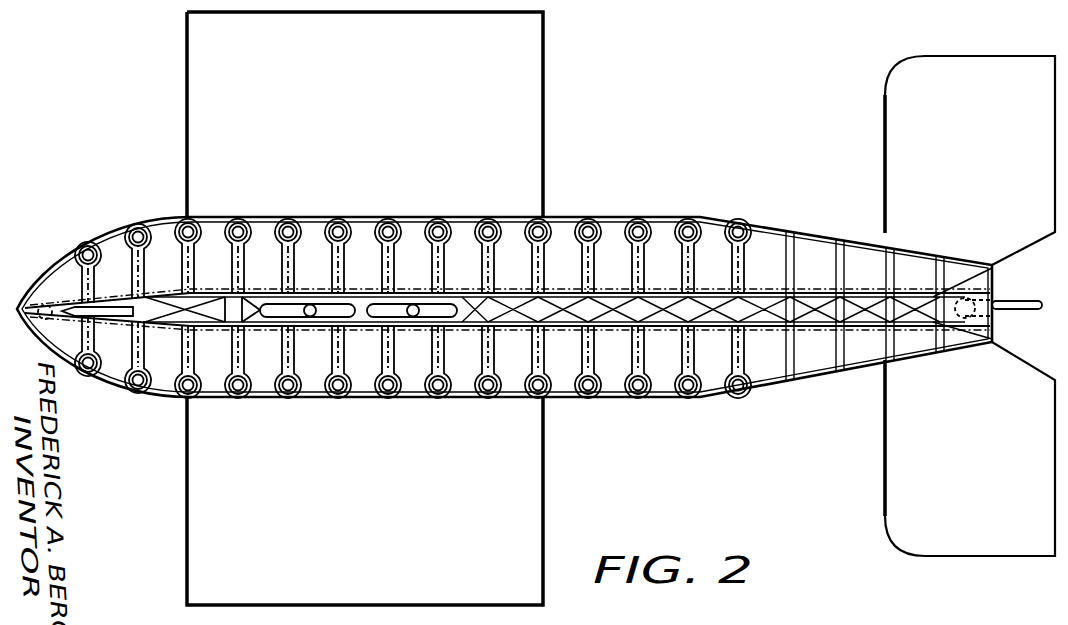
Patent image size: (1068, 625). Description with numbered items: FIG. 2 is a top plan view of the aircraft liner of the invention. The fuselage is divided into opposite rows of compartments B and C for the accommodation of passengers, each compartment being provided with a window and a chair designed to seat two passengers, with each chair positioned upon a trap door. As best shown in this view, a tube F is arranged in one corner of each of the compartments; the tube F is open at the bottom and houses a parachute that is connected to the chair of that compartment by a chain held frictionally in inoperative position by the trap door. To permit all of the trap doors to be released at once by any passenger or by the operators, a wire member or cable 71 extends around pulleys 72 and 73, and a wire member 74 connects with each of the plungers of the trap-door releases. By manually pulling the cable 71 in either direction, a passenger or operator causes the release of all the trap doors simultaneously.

The cable 71 is at (352, 290).
The pulley 72 is at (988, 316).
The pulley 73 is at (40, 306).
The wire member 74 is at (93, 283).
The compartments B is at (458, 243).
The compartments C is at (464, 367).
The tube F is at (679, 218).